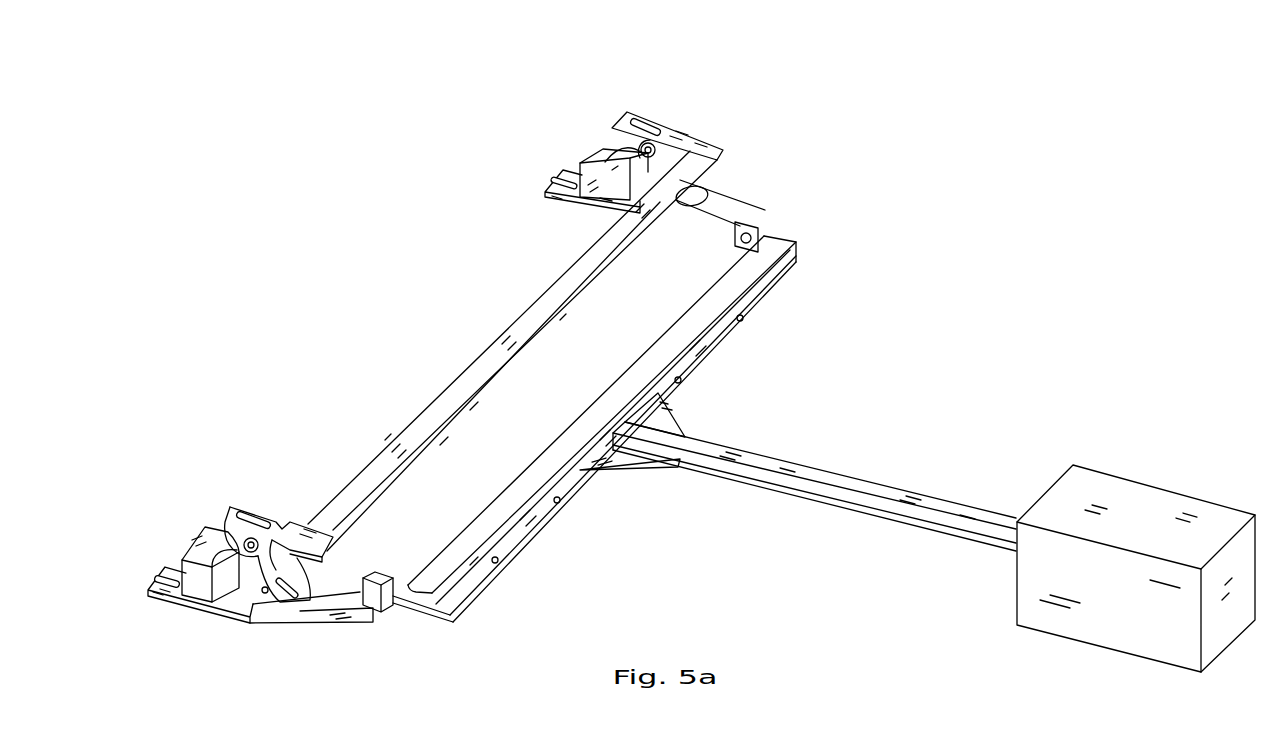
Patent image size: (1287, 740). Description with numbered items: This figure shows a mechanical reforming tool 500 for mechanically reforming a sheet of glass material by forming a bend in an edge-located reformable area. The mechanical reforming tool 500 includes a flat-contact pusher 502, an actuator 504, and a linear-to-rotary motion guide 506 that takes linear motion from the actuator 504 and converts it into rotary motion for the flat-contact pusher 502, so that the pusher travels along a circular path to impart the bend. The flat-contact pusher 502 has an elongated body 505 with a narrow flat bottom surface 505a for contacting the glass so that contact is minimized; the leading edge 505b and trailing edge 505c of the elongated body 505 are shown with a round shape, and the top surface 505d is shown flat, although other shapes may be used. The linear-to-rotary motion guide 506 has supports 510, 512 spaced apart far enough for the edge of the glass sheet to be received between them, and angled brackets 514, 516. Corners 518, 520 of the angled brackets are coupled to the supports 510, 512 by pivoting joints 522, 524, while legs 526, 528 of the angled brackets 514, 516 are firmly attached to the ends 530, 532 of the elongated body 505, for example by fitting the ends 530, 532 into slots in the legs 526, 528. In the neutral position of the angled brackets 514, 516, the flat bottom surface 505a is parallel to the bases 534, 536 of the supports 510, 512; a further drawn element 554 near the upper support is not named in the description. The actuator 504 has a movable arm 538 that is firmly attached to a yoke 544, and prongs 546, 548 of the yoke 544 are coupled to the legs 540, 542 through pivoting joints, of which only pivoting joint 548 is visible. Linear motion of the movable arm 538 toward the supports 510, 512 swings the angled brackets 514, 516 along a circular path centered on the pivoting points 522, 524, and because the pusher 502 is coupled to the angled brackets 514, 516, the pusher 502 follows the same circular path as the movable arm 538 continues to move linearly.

The mechanical reforming tool 500 is at (348, 160).
The flat-contact pusher 502 is at (516, 316).
The actuator 504 is at (1140, 495).
The elongated body 505 is at (440, 403).
The flat bottom surface 505a is at (473, 397).
The leading edge 505b is at (447, 383).
The trailing edge 505c is at (577, 298).
The top surface 505d is at (568, 272).
The linear-to-rotary motion guide 506 is at (189, 544).
The support 510 is at (199, 581).
The support 512 is at (621, 108).
The angled bracket 514 is at (256, 506).
The angled bracket 516 is at (649, 114).
The corner 518 is at (283, 510).
The corner 520 is at (678, 128).
The pivoting joint 522 is at (247, 553).
The pivoting joint 524 is at (617, 123).
The leg 526 is at (297, 530).
The leg 528 is at (693, 148).
The end of elongated body 530 is at (312, 602).
The end of elongated body 532 is at (690, 168).
The base 534 is at (160, 573).
The base 536 is at (560, 177).
The movable arm 538 is at (860, 480).
The leg 540 is at (292, 604).
The leg 542 is at (605, 152).
The yoke 544 is at (580, 433).
The prong 546 is at (378, 605).
The prong / pivoting joint 548 is at (707, 195).
The base plate 554 is at (570, 197).